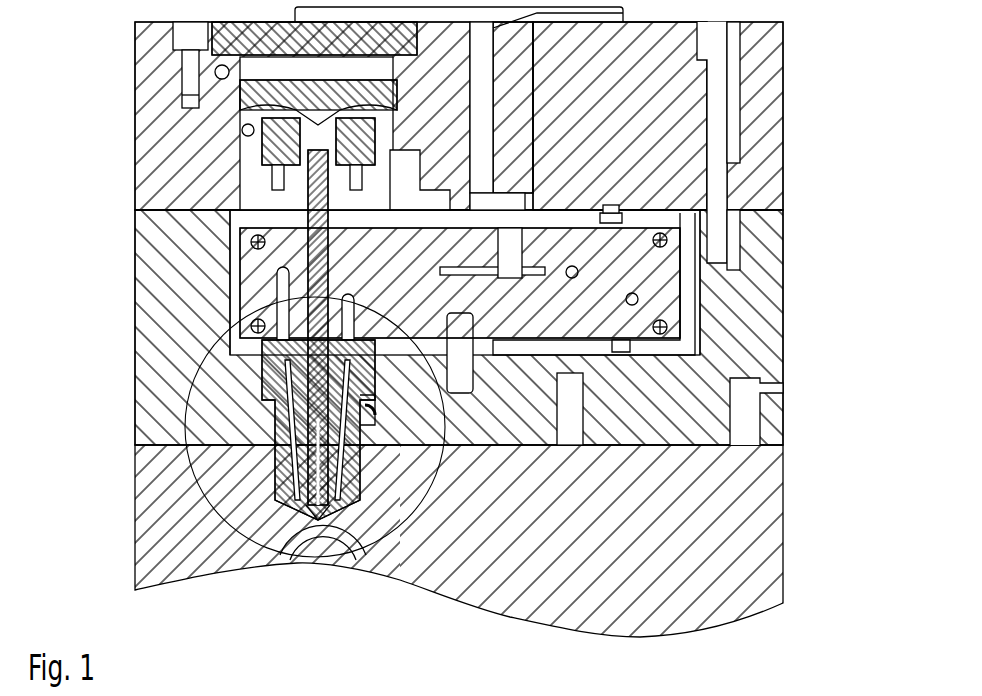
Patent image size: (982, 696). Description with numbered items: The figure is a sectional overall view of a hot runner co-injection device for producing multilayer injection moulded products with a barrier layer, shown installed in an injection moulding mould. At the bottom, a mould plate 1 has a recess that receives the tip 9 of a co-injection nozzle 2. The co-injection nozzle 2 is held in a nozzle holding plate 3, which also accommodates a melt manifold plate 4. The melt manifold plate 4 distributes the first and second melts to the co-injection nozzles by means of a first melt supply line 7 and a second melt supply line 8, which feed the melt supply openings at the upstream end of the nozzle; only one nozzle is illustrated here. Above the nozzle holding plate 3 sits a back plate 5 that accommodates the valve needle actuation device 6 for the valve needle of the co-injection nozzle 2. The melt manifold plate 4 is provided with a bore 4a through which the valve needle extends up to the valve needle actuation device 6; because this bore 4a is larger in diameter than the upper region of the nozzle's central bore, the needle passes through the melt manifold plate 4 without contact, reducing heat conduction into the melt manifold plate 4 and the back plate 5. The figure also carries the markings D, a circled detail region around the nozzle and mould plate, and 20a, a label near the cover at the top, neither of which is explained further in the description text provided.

The mould plate 1 is at (459, 570).
The co-injection nozzle 2 is at (218, 351).
The nozzle holding plate 3 is at (498, 327).
The melt manifold plate 4 is at (545, 282).
The bore 4a is at (175, 278).
The back plate 5 is at (665, 140).
The valve needle actuation device 6 is at (227, 141).
The first melt supply line 7 is at (207, 320).
The second melt supply line 8 is at (729, 182).
The tip 9 is at (372, 576).
The detail region D is at (315, 463).
The cover plate 20a is at (459, 351).